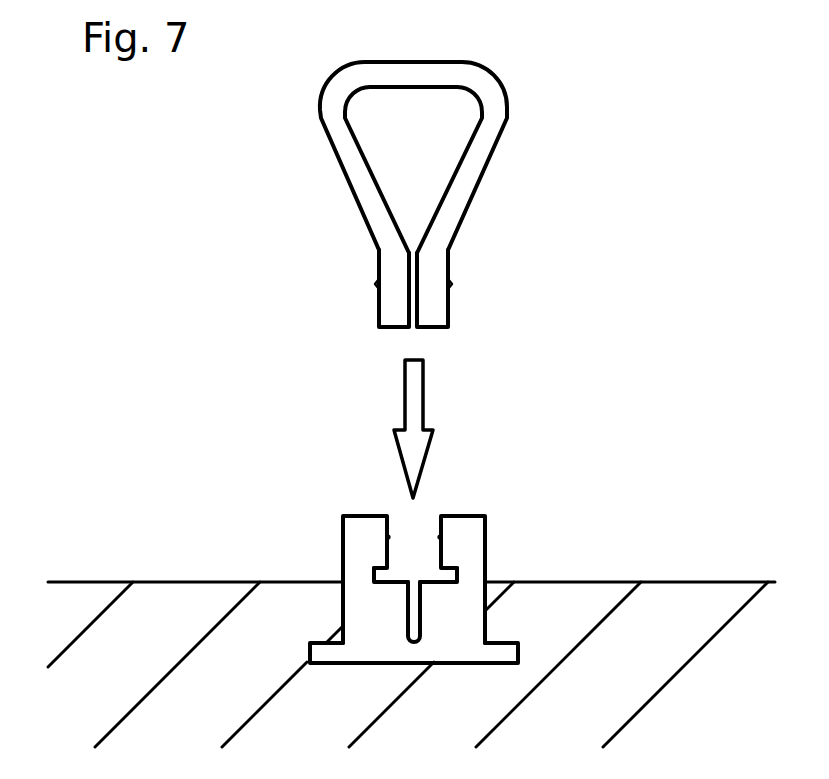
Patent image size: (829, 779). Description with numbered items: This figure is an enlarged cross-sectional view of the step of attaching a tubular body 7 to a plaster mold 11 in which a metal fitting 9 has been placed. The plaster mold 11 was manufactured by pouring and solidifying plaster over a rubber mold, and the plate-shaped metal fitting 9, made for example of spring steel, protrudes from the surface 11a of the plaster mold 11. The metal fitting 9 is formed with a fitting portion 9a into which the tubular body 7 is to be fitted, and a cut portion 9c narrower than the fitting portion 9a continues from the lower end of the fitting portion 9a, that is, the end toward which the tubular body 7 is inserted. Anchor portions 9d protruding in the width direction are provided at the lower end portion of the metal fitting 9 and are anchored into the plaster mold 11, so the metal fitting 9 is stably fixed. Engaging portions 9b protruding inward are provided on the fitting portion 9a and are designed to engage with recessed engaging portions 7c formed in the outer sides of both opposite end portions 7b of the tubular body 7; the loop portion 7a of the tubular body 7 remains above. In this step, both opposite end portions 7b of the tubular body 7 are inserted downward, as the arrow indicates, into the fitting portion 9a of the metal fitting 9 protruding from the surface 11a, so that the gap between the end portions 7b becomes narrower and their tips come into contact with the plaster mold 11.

The tubular body 7 is at (402, 197).
The loop portion of clip 7a is at (440, 197).
The opposite end portions 7b is at (379, 310).
The recessed engaging portions 7c is at (414, 257).
The metal fitting 9 is at (410, 568).
The fitting portion 9a is at (434, 530).
The engaging portions 9b is at (387, 537).
The cut portion 9c is at (408, 605).
The anchor portions 9d is at (312, 648).
The plaster mold 11 is at (411, 582).
The surface 11a is at (665, 582).